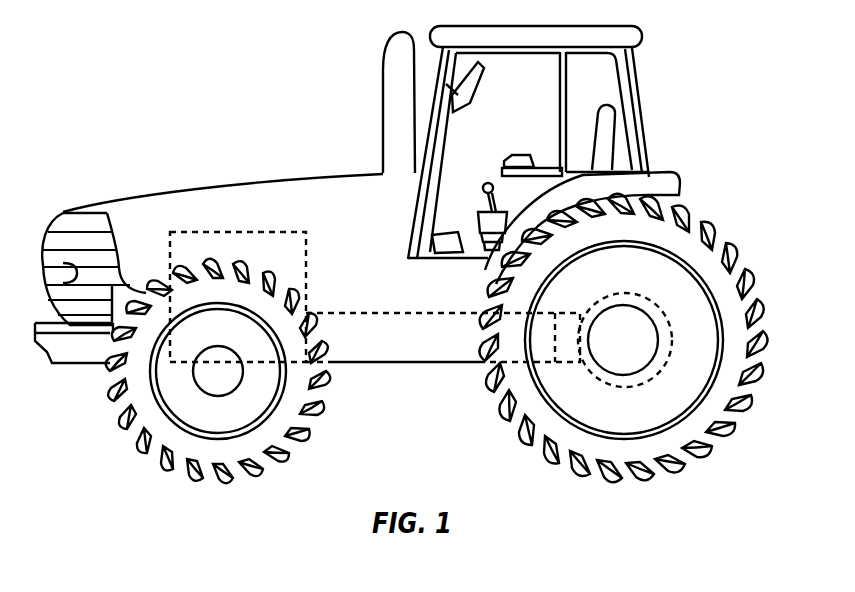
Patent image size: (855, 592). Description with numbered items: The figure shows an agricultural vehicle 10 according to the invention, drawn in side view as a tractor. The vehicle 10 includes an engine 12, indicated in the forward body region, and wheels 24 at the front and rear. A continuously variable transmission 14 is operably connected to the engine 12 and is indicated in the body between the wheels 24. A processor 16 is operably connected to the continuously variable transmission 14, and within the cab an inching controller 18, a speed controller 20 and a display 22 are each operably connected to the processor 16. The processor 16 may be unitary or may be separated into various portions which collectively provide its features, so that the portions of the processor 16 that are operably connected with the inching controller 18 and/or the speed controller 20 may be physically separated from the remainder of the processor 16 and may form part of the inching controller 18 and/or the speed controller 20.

The agricultural vehicle 10 is at (691, 105).
The engine 12 is at (250, 230).
The continuously variable transmission 14 is at (385, 312).
The processor 16 is at (444, 233).
The inching controller 18 is at (526, 154).
The speed controller 20 is at (480, 202).
The display 22 is at (470, 95).
The wheels 24 is at (150, 455).